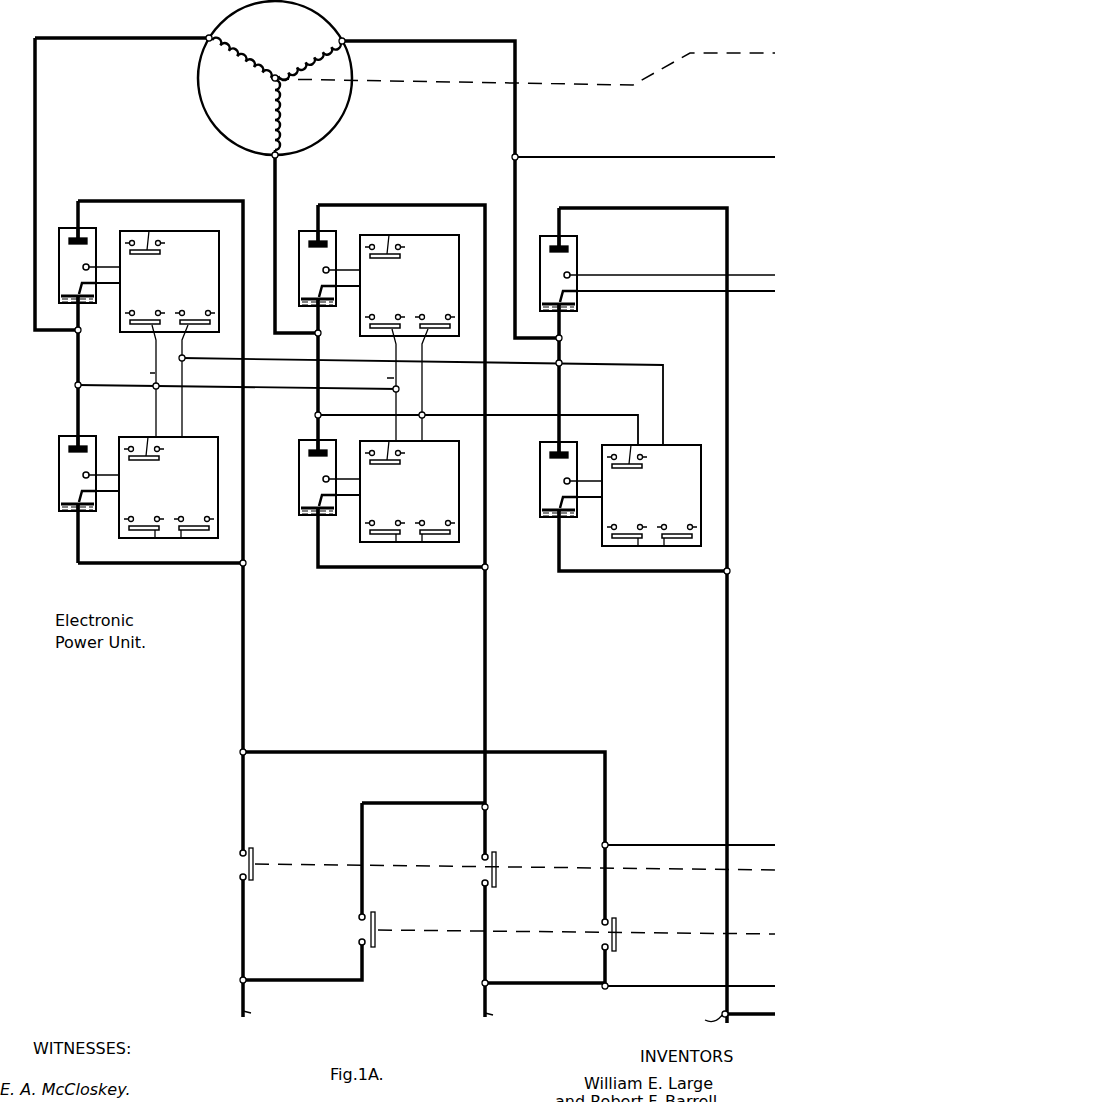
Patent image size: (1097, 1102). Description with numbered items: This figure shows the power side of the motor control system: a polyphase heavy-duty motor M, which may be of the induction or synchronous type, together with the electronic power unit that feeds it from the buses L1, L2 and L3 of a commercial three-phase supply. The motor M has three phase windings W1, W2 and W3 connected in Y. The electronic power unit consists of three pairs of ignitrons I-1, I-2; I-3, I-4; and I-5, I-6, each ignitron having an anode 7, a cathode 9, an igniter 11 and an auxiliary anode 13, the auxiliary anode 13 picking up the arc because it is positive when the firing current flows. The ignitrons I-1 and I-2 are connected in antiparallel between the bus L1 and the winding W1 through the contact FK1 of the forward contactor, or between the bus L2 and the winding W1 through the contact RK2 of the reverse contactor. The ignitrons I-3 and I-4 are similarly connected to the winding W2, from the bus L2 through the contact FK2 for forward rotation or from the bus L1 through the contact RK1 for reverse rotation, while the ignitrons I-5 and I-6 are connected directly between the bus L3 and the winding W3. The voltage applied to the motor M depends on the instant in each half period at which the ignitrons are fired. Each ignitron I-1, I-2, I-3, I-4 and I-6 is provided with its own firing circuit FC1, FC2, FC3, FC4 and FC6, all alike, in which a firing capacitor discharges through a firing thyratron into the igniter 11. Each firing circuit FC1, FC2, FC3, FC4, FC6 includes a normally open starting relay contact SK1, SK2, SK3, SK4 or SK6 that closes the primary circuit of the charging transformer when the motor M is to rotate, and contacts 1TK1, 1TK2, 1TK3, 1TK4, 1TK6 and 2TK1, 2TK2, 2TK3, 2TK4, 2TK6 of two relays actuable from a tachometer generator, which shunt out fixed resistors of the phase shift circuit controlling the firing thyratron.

The anode 7 is at (81, 237).
The cathode 9 is at (64, 306).
The igniter 11 is at (91, 291).
The auxiliary anode 13 is at (85, 265).
The motor M is at (341, 113).
The phase winding W1 is at (250, 52).
The phase winding W2 is at (272, 111).
The phase winding W3 is at (300, 52).
The ignitron I-1 is at (71, 255).
The ignitron I-2 is at (71, 464).
The ignitron I-3 is at (309, 257).
The ignitron I-4 is at (309, 466).
The ignitron I-5 is at (550, 262).
The ignitron I-6 is at (545, 470).
The firing circuit FC1 is at (183, 234).
The firing circuit FC2 is at (183, 444).
The firing circuit FC3 is at (414, 236).
The firing circuit FC4 is at (432, 442).
The firing circuit FC6 is at (671, 448).
The starting relay contact SK1 is at (145, 231).
The starting relay contact SK2 is at (138, 438).
The starting relay contact SK3 is at (382, 233).
The starting relay contact SK4 is at (380, 440).
The starting relay contact SK6 is at (620, 445).
The relay contact 1TK1 is at (187, 338).
The relay contact 1TK2 is at (198, 539).
The relay contact 1TK3 is at (427, 338).
The relay contact 1TK4 is at (421, 545).
The relay contact 1TK6 is at (663, 549).
The relay contact 2TK1 is at (152, 338).
The relay contact 2TK2 is at (138, 539).
The relay contact 2TK3 is at (391, 338).
The relay contact 2TK4 is at (394, 545).
The relay contact 2TK6 is at (637, 549).
The forward contactor contact FK1 is at (256, 850).
The forward contactor contact FK2 is at (500, 855).
The reverse contactor contact RK1 is at (380, 920).
The reverse contactor contact RK2 is at (622, 925).
The bus L1 is at (263, 693).
The bus L2 is at (469, 696).
The bus L3 is at (452, 695).